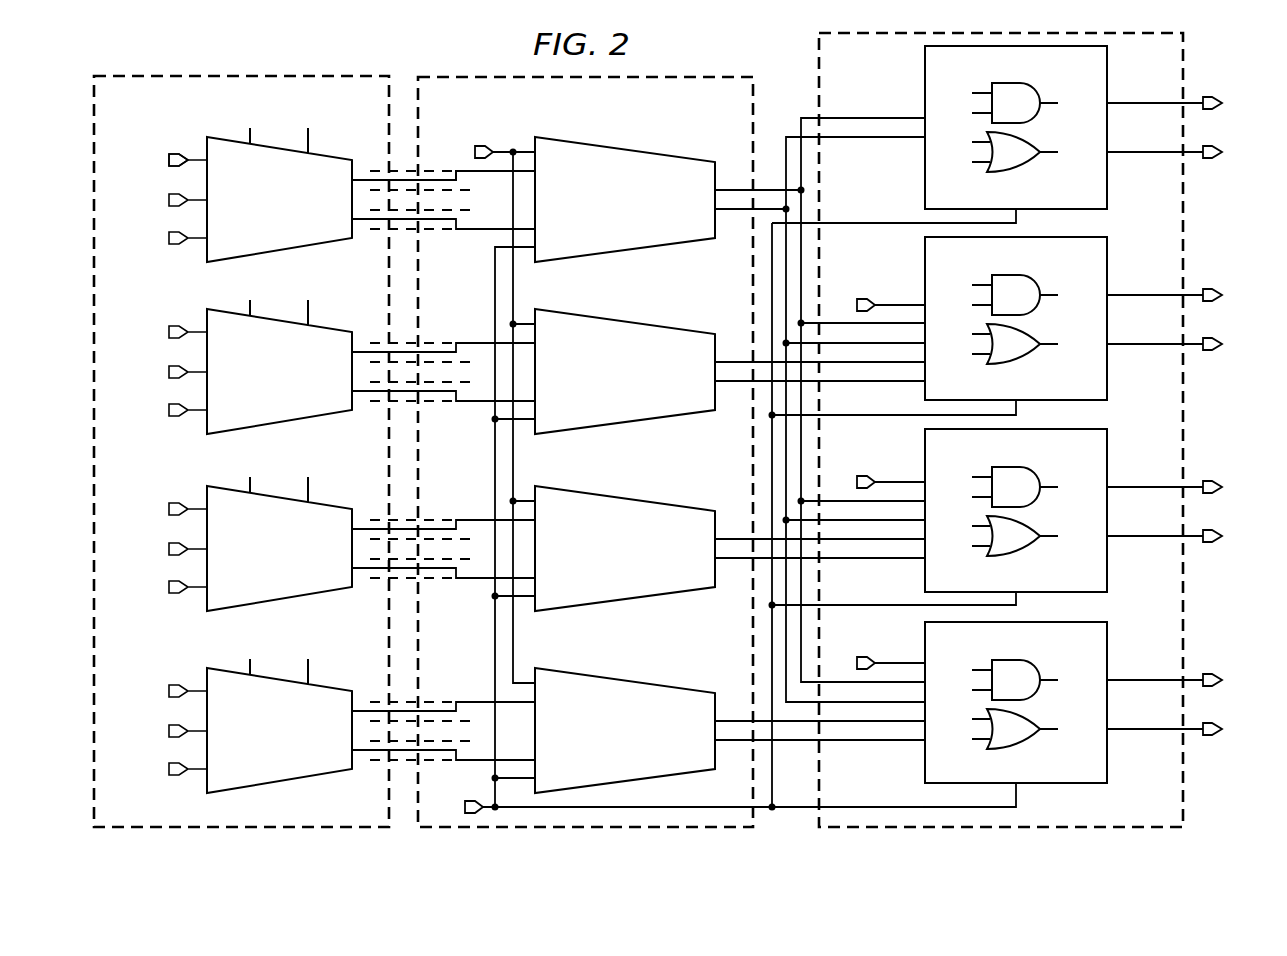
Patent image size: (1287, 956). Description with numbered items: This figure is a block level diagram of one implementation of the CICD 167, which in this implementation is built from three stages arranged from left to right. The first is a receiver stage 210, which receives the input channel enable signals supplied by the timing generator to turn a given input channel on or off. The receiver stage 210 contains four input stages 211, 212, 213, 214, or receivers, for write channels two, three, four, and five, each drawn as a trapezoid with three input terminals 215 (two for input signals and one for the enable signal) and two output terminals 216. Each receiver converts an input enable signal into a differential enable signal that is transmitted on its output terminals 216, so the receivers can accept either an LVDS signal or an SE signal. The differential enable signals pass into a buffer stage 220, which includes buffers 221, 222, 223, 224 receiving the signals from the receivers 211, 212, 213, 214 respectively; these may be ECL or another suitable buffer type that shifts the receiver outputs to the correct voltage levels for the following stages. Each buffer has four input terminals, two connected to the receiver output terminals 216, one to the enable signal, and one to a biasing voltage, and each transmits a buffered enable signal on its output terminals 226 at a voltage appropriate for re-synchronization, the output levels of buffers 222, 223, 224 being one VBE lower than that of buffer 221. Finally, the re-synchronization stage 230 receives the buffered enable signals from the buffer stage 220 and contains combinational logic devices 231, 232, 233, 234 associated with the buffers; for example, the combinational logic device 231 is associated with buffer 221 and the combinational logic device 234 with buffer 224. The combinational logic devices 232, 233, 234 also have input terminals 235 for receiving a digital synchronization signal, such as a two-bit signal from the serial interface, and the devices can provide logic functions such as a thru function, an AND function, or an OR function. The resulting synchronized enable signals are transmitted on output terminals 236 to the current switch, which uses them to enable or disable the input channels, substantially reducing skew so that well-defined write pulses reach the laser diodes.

The CICD 167 is at (1217, 770).
The receiver stage 210 is at (368, 113).
The input stage 211 is at (296, 212).
The input stage 212 is at (296, 385).
The input stage 213 is at (296, 562).
The input stage 214 is at (296, 744).
The input terminals 215 is at (155, 214).
The output terminals 216 is at (362, 242).
The buffer stage 220 is at (727, 113).
The buffer 221 is at (640, 213).
The buffer 222 is at (640, 385).
The buffer 223 is at (640, 562).
The buffer 224 is at (640, 744).
The output terminals 226 is at (729, 236).
The re-synchronization stage 230 is at (890, 99).
The combinational logic device 231 is at (1108, 185).
The combinational logic device 232 is at (1108, 377).
The combinational logic device 233 is at (1108, 569).
The combinational logic device 234 is at (1107, 760).
The input terminals 235 is at (889, 304).
The output terminals 236 is at (1136, 93).